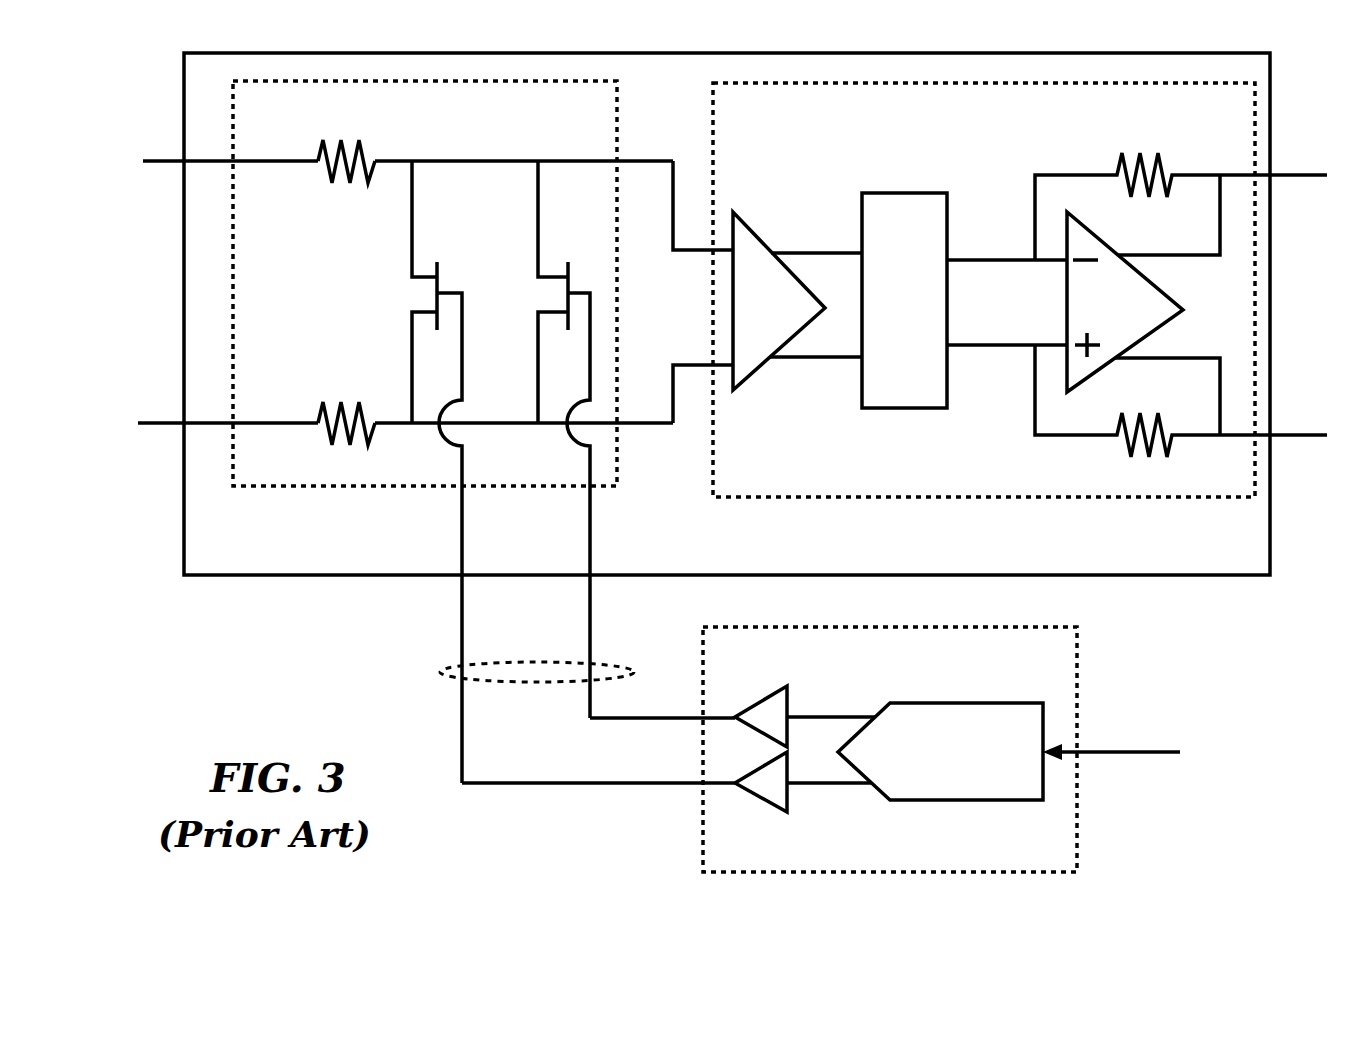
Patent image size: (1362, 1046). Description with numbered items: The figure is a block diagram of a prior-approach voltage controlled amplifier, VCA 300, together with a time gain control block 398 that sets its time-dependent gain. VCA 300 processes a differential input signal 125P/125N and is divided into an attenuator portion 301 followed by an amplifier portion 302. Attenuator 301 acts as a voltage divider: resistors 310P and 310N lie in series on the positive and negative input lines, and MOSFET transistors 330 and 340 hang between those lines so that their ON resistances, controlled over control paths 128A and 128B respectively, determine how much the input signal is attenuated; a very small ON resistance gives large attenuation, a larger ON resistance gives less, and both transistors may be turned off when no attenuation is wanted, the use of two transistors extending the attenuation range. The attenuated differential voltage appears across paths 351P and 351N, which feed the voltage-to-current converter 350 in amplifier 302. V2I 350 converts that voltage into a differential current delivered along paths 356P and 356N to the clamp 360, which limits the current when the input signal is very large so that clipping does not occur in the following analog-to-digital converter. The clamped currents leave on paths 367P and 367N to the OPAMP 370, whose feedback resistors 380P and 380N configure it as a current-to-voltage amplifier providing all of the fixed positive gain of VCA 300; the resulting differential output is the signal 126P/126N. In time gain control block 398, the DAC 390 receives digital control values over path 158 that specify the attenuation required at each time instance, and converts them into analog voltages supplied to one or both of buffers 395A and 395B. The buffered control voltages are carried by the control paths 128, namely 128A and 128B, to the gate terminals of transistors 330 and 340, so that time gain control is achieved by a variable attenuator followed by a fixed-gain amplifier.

The VCA 300 is at (730, 47).
The attenuator portion 301 is at (393, 494).
The amplifier portion 302 is at (957, 508).
The input signal 125P is at (146, 159).
The input signal 125N is at (142, 421).
The resistor 310P is at (353, 140).
The resistor 310N is at (352, 402).
The MOSFET transistor 330 is at (437, 262).
The MOSFET transistor 340 is at (568, 262).
The path 351P is at (673, 159).
The path 351N is at (673, 363).
The voltage-to-current converter 350 is at (745, 386).
The path 356P is at (838, 252).
The path 356N is at (835, 358).
The clamp 360 is at (904, 300).
The path 367P is at (1003, 259).
The path 367N is at (1003, 347).
The OPAMP 370 is at (1143, 305).
The feedback resistor 380P is at (1125, 155).
The feedback resistor 380N is at (1157, 457).
The output signal 126P is at (1310, 173).
The output signal 126N is at (1310, 430).
The control paths 128 is at (437, 672).
The control path 128A is at (462, 592).
The control path 128B is at (590, 592).
The time gain control block 398 is at (890, 749).
The buffer 395A is at (757, 796).
The buffer 395B is at (757, 704).
The DAC 390 is at (940, 751).
The path 158 is at (1140, 750).